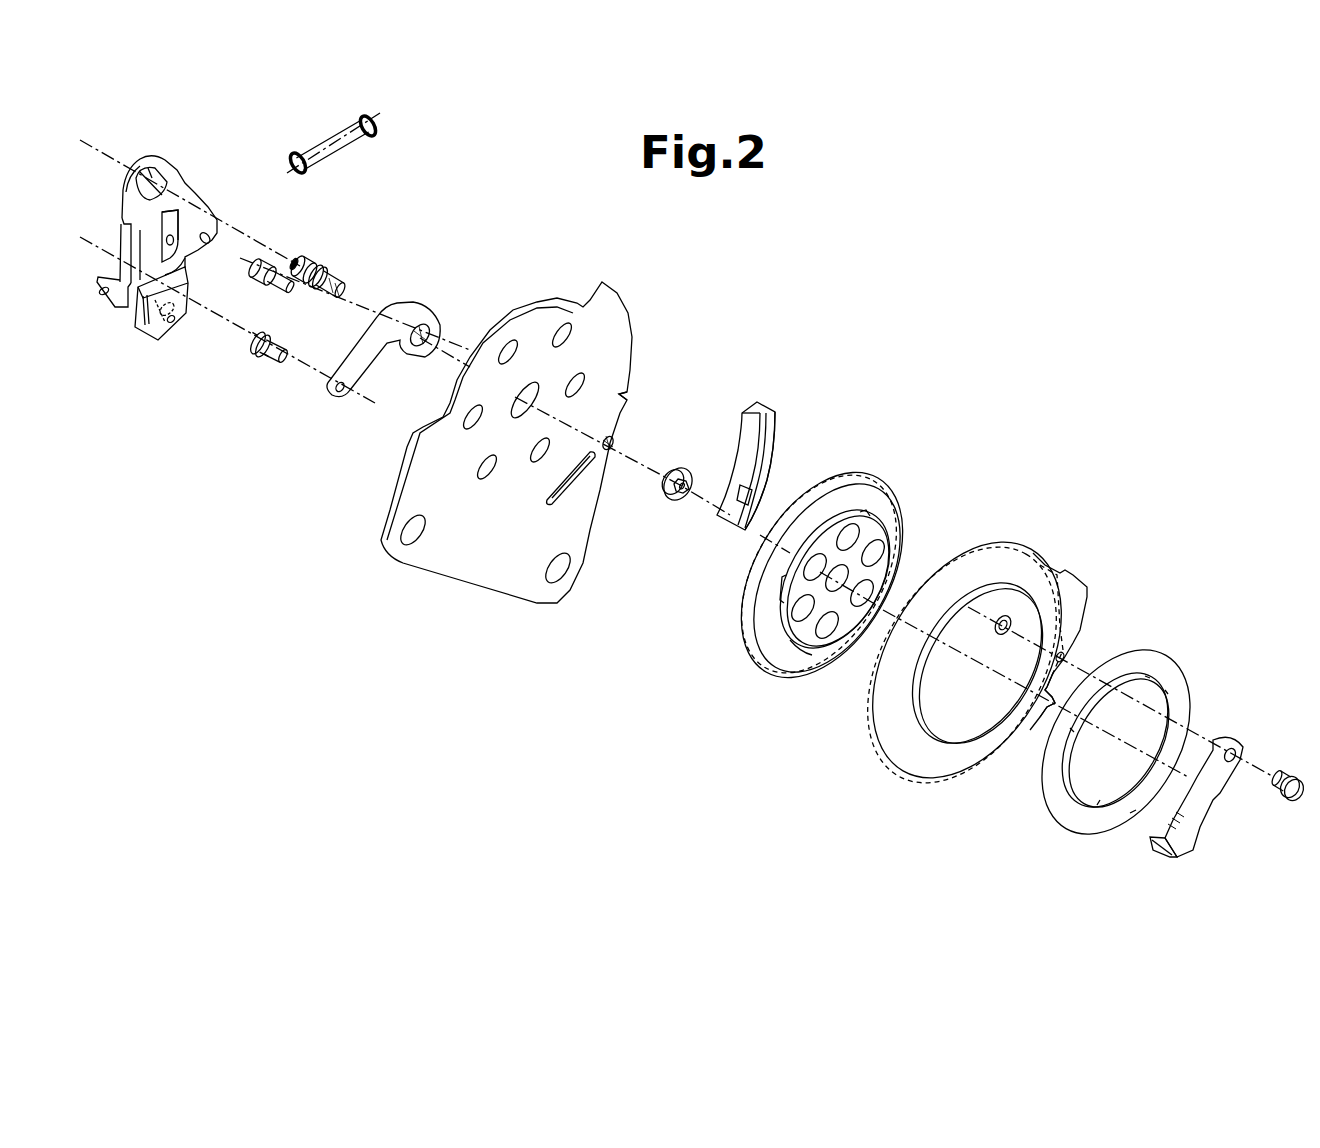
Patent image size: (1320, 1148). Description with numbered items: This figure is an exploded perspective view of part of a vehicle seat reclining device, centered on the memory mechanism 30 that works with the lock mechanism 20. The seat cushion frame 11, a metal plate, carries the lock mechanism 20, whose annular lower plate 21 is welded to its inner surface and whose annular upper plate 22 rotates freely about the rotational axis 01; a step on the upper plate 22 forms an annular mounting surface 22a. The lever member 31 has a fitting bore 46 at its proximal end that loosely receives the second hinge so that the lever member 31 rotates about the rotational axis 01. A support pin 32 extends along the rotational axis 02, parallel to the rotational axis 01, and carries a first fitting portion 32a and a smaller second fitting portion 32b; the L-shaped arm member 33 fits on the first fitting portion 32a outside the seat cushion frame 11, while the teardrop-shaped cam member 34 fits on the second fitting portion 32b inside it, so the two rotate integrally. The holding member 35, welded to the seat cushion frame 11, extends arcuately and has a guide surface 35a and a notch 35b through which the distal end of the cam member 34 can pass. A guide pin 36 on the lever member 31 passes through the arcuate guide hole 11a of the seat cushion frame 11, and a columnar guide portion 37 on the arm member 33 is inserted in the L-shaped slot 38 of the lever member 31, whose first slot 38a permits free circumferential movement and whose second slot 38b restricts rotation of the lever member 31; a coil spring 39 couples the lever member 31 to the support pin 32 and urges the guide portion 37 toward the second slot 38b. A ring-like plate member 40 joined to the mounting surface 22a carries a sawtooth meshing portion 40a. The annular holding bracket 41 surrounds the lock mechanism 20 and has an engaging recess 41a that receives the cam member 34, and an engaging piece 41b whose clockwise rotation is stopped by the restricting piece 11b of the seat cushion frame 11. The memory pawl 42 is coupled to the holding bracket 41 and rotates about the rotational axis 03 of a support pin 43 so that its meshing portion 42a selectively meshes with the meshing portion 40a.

The rotational axis 01 is at (100, 156).
The rotational axis 02 is at (640, 450).
The rotational axis 03 is at (1257, 768).
The seat cushion frame 11 is at (528, 455).
The guide hole 11a is at (586, 488).
The restricting piece 11b is at (626, 393).
The lock mechanism 20 is at (828, 570).
The lower plate 21 is at (752, 652).
The upper plate 22 is at (853, 605).
The mounting surface 22a is at (802, 658).
The memory mechanism 30 is at (954, 349).
The lever member 31 is at (190, 247).
The support pin 32 is at (350, 252).
The first fitting portion 32a is at (324, 266).
The second fitting portion 32b is at (346, 291).
The arm member 33 is at (440, 323).
The cam member 34 is at (692, 470).
The holding member 35 is at (772, 462).
The guide surface 35a is at (772, 433).
The notch 35b is at (745, 517).
The guide pin 36 is at (258, 262).
The guide portion 37 is at (262, 358).
The slot 38 is at (250, 272).
The first slot 38a is at (172, 302).
The second slot 38b is at (180, 250).
The coil spring 39 is at (383, 120).
The plate member 40 is at (1122, 746).
The meshing portion 40a is at (1126, 822).
The holding bracket 41 is at (983, 656).
The engaging recess 41a is at (1042, 706).
The engaging piece 41b is at (1068, 663).
The memory pawl 42 is at (1187, 817).
The meshing portion 42a is at (1150, 836).
The support pin 43 is at (1298, 800).
The fitting bore 46 is at (170, 170).